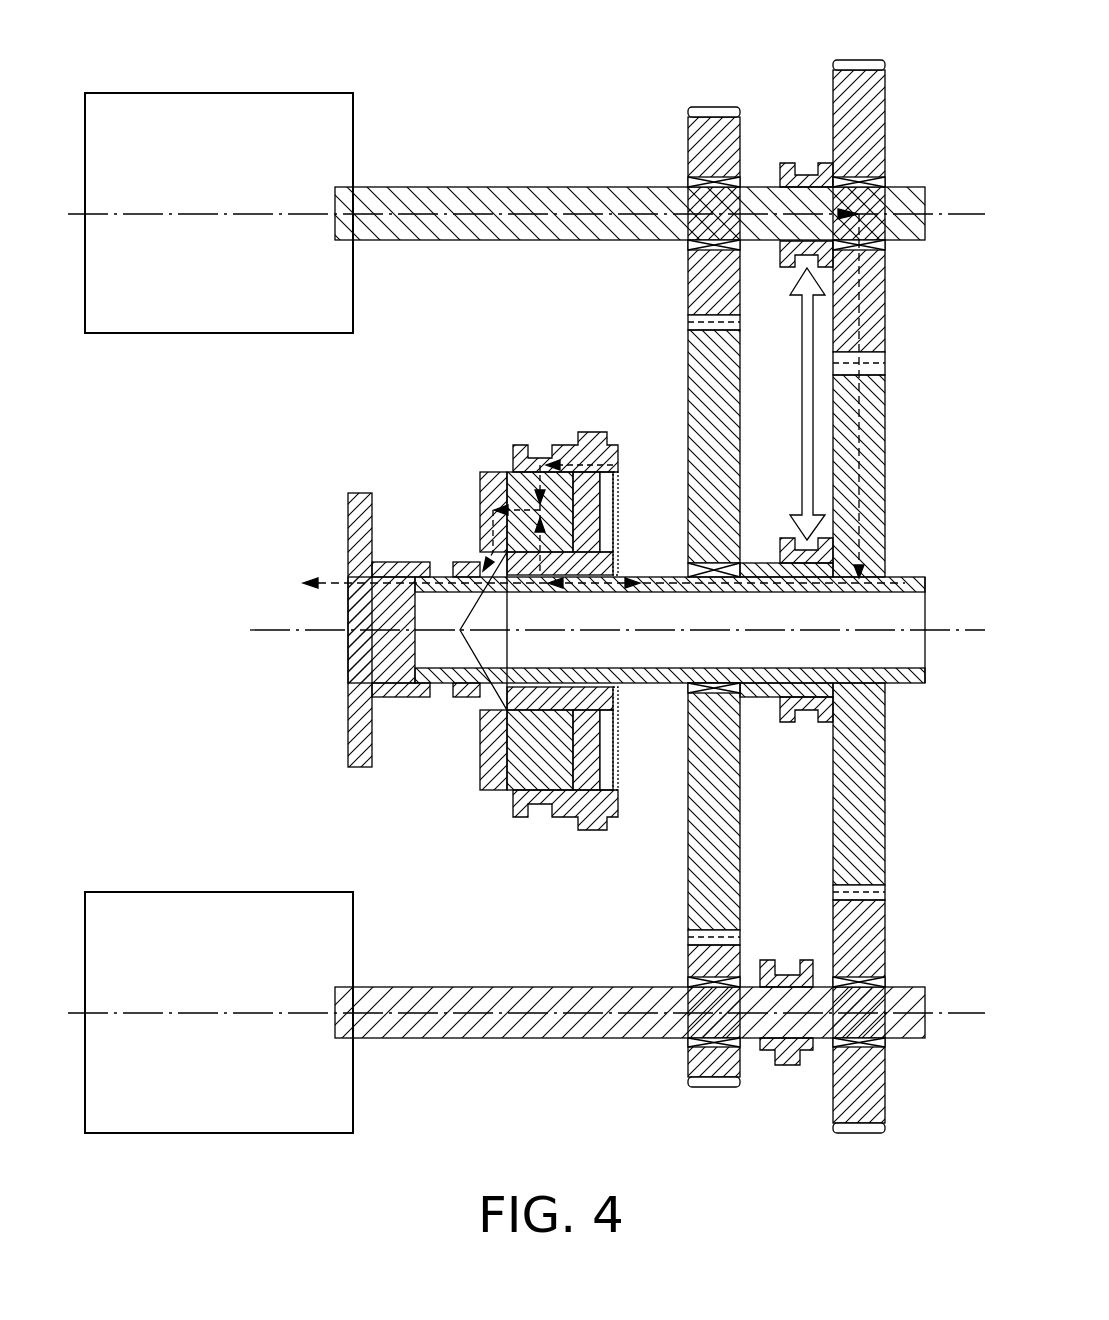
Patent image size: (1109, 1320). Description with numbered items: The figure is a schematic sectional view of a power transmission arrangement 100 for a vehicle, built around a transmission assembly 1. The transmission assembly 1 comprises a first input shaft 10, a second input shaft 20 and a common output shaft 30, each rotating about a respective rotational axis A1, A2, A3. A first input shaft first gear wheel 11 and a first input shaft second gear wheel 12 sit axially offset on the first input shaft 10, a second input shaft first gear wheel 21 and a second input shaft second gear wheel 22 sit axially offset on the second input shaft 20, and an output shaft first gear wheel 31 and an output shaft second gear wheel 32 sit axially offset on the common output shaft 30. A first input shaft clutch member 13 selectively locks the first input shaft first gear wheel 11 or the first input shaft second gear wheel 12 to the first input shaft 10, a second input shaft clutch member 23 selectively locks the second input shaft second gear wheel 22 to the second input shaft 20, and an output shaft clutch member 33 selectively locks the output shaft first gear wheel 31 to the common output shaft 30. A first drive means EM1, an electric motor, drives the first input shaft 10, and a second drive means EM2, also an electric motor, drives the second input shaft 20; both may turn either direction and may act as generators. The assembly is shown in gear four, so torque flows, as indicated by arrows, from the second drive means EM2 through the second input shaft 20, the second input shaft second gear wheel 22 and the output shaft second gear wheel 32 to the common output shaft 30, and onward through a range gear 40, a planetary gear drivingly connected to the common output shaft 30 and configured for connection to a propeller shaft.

The transmission assembly 1 is at (526, 567).
The power transmission arrangement 100 is at (540, 73).
The first input shaft 10 is at (506, 987).
The first input shaft first gear wheel 11 is at (688, 960).
The first input shaft second gear wheel 12 is at (885, 920).
The first input shaft clutch member 13 is at (813, 975).
The second input shaft 20 is at (506, 187).
The second input shaft first gear wheel 21 is at (688, 130).
The second input shaft second gear wheel 22 is at (885, 100).
The second input shaft clutch member 23 is at (806, 172).
The common output shaft 30 is at (660, 575).
The output shaft first gear wheel 31 is at (688, 380).
The output shaft second gear wheel 32 is at (885, 385).
The output shaft clutch member 33 is at (833, 555).
The range gear 40 is at (488, 471).
The rotational axis A1 is at (130, 1012).
The rotational axis A2 is at (130, 212).
The rotational axis A3 is at (270, 602).
The first drive means EM1 is at (234, 892).
The second drive means EM2 is at (234, 93).